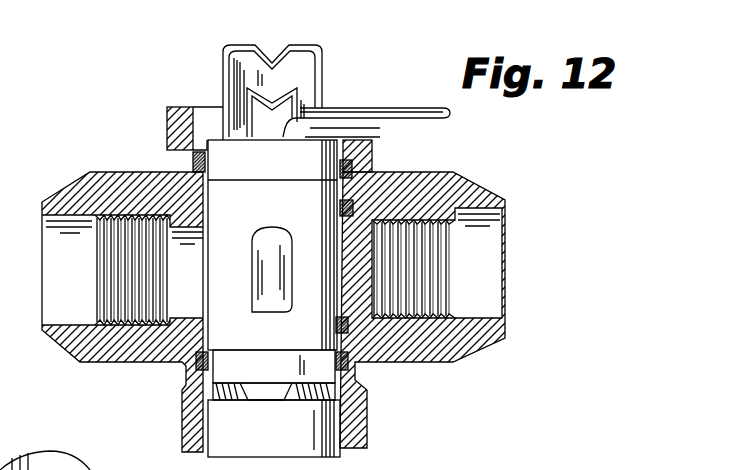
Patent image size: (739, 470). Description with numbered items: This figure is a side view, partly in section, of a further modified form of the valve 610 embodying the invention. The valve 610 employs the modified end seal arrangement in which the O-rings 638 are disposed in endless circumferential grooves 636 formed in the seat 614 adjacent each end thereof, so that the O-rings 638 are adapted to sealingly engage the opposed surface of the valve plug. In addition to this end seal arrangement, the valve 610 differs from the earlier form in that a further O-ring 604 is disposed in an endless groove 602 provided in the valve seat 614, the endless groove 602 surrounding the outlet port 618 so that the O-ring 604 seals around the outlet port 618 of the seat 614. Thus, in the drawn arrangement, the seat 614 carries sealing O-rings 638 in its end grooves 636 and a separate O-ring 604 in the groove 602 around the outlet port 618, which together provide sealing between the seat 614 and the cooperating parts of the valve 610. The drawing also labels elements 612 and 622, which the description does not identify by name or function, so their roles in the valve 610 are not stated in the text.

The endless groove 602 is at (385, 180).
The O-ring 604 is at (335, 212).
The valve 610 is at (463, 146).
The body fitting 612 is at (465, 176).
The valve seat 614 is at (166, 162).
The outlet port 618 is at (343, 310).
The valve seat 622 is at (220, 305).
The endless circumferential grooves 636 is at (375, 160).
The O-rings 638 is at (203, 205).